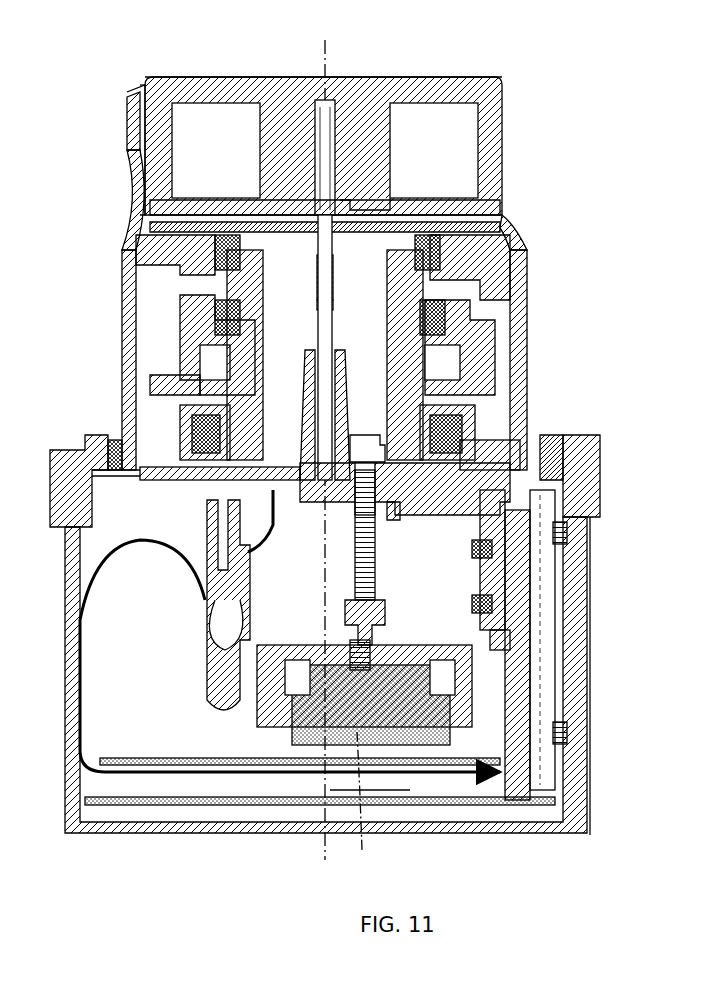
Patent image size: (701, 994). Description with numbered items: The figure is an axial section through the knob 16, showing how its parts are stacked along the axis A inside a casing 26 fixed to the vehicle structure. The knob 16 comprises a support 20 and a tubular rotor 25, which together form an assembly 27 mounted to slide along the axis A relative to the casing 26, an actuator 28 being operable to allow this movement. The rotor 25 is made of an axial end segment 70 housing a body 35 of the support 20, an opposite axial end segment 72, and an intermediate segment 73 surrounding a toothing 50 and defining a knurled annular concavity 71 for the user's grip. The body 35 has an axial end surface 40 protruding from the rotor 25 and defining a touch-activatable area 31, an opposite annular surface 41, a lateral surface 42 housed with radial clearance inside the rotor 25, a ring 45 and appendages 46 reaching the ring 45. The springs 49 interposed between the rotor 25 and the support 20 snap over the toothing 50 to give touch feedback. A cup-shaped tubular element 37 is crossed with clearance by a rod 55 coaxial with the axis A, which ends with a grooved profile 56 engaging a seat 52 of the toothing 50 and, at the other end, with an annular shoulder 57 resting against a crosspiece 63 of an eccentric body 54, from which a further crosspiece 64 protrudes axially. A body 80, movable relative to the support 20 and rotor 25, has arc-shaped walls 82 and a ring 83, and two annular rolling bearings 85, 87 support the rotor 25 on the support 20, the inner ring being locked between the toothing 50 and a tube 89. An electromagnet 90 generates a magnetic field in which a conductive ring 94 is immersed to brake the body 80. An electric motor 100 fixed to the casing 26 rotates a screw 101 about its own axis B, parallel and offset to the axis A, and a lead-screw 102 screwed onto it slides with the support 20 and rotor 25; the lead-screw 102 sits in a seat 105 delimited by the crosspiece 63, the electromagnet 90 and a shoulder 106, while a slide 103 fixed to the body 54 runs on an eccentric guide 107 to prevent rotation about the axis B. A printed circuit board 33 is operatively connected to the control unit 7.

The control unit 7 is at (125, 478).
The knob 16 is at (560, 140).
The support 20 is at (175, 70).
The rotor 25 is at (583, 265).
The casing 26 is at (575, 632).
The assembly 27 is at (600, 348).
The actuator 28 is at (390, 720).
The area 31 is at (350, 72).
The printed circuit board 33 is at (218, 780).
The body 35 is at (290, 160).
The cup-shaped tubular element 37 is at (248, 335).
The axial end surface 40 is at (270, 73).
The surface 41 is at (148, 228).
The lateral surface 42 is at (132, 103).
The ring 45 is at (505, 232).
The appendages 46 is at (345, 198).
The springs 49 is at (333, 133).
The toothing 50 is at (325, 150).
The seat 52 is at (333, 275).
The body 54 is at (478, 582).
The rod 55 is at (333, 420).
The grooved profile 56 is at (335, 300).
The annular shoulder 57 is at (305, 455).
The crosspiece 63 is at (575, 492).
The crosspiece 64 is at (502, 645).
The axial end segment 70 is at (128, 125).
The knurled annular concavity 71 is at (128, 208).
The axial end segment 72 is at (120, 388).
The segment 73 is at (148, 275).
The body 80 is at (490, 357).
The walls 82 is at (490, 404).
The ring 83 is at (175, 300).
The annular rolling bearing 85 is at (490, 252).
The annular rolling bearing 87 is at (440, 318).
The tube 89 is at (230, 290).
The electromagnet 90 is at (198, 460).
The ring 94 is at (205, 385).
The electric motor 100 is at (420, 735).
The screw 101 is at (375, 560).
The lead-screw 102 is at (385, 490).
The slide 103 is at (530, 582).
The seat 105 is at (355, 585).
The shoulder 106 is at (393, 510).
The guide 107 is at (552, 675).
The axis A is at (322, 75).
The axis B is at (359, 801).